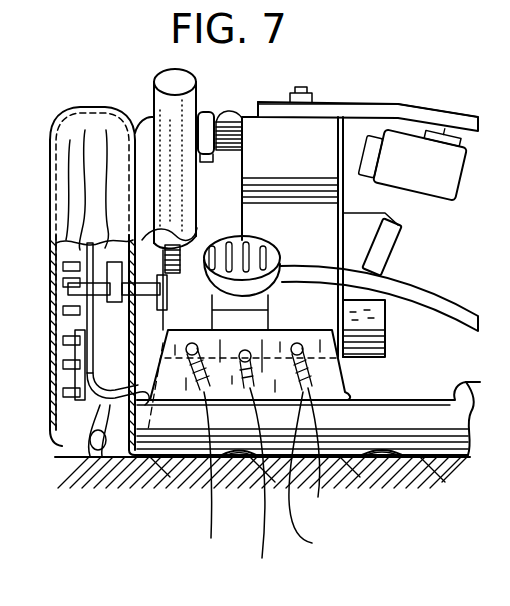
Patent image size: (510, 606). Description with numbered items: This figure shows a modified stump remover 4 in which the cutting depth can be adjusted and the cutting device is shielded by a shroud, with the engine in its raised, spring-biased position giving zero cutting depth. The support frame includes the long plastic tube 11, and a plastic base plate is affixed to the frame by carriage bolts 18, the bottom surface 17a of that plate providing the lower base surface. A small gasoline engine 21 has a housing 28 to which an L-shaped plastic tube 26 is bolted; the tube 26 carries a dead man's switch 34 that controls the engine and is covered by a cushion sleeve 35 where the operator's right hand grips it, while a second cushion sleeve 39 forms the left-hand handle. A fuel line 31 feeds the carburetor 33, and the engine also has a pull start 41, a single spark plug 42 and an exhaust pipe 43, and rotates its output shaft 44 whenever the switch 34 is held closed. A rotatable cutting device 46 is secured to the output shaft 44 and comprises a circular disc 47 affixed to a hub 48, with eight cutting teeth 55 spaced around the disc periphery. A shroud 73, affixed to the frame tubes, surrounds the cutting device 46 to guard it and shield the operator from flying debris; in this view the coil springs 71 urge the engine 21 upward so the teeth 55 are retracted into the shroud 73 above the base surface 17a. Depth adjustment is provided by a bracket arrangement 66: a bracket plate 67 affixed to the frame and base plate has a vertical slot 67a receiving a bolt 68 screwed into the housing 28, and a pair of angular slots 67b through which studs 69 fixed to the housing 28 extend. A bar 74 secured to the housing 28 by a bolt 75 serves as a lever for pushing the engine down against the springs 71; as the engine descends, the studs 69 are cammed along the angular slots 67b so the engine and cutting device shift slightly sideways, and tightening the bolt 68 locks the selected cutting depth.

The mower 4 is at (281, 406).
The plastic tube 11 is at (472, 383).
The bottom surface 17a is at (173, 456).
The carriage bolts 18 is at (382, 502).
The engine 21 is at (242, 98).
The L-shaped plastic tube 26 is at (370, 158).
The housing 28 is at (344, 193).
The fuel line 31 is at (465, 306).
The carburetor 33 is at (254, 240).
The dead man's switch 34 is at (445, 125).
The cushion sleeve 35 is at (434, 190).
The cushion sleeve 39 is at (198, 90).
The pull start 41 is at (400, 250).
The spark plug 42 is at (206, 165).
The exhaust pipe 43 is at (146, 122).
The output shaft 44 is at (191, 272).
The rotatable cutting device 46 is at (63, 268).
The circular disc 47 is at (89, 200).
The hub 48 is at (105, 240).
The cutting teeth 55 is at (80, 460).
The bracket arrangement 66 is at (358, 380).
The bracket plate 67 is at (317, 455).
The vertical slot 67a is at (264, 485).
The angular slots 67b is at (270, 476).
The bolt 68 is at (245, 349).
The studs 69 is at (299, 343).
The coil springs 71 is at (386, 318).
The shroud 73 is at (82, 110).
The bar 74 is at (438, 112).
The bolt 75 is at (306, 87).